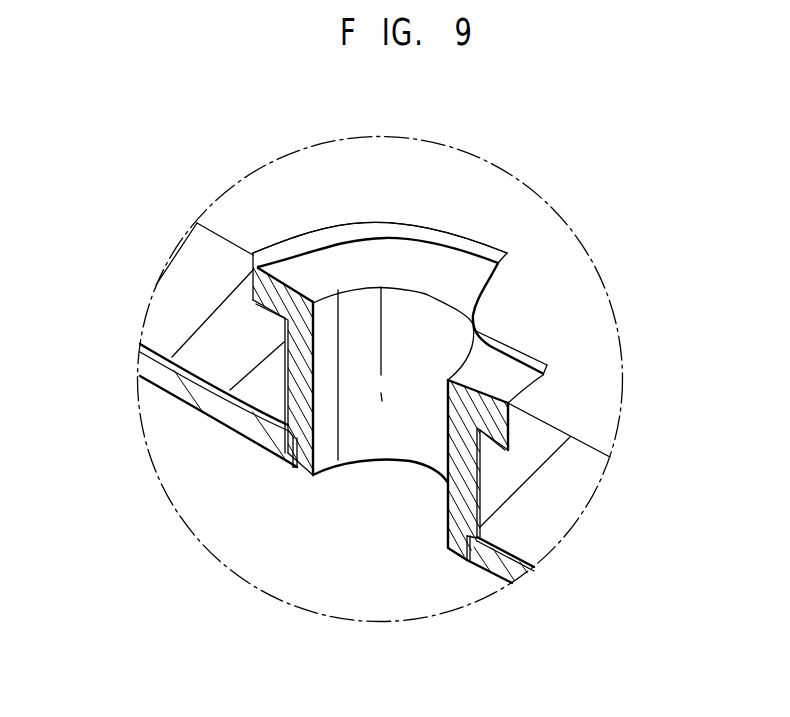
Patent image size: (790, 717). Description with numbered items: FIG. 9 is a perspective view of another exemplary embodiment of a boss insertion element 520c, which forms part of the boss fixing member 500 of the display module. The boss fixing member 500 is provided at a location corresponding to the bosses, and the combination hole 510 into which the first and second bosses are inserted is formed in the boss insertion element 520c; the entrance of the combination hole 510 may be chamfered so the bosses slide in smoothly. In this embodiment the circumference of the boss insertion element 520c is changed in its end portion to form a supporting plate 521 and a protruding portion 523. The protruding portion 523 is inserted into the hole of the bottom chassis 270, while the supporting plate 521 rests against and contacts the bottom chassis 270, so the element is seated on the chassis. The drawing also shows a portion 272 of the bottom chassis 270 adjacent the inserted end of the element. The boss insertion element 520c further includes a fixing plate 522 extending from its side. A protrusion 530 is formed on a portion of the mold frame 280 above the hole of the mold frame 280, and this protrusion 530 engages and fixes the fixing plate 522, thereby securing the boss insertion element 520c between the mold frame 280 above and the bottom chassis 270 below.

The boss fixing member 500 is at (376, 195).
The combination hole 510 is at (400, 322).
The boss insertion element 520c is at (302, 264).
The protrusion 530 is at (493, 310).
The fixing plate 522 is at (508, 381).
The supporting plate 521 is at (508, 581).
The protruding portion 523 is at (447, 549).
The bottom chassis 270 is at (152, 366).
The plate end tab 272 is at (295, 466).
The mold frame 280 is at (190, 295).